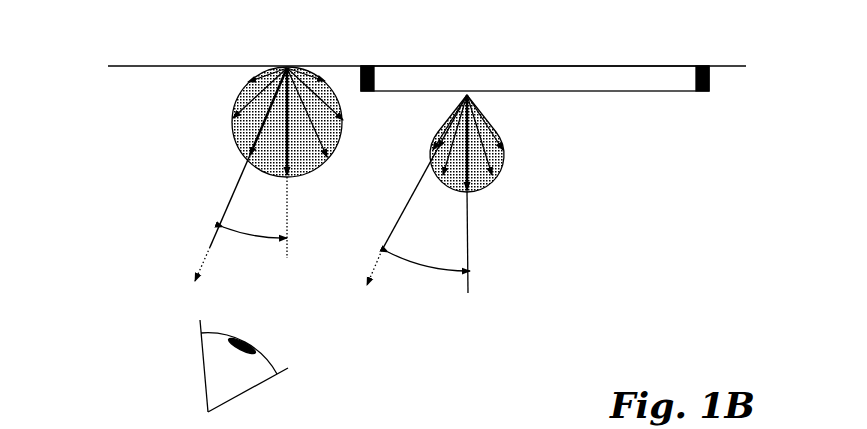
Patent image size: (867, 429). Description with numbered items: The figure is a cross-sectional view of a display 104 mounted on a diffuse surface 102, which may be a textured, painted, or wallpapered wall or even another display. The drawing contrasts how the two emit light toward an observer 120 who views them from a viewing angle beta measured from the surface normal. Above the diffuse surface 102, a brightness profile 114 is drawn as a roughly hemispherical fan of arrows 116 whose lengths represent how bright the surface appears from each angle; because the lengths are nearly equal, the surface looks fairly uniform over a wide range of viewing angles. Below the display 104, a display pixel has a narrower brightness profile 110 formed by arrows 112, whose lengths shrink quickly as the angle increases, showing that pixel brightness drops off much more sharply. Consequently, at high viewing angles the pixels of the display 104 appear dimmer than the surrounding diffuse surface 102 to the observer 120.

The diffuse surface 102 is at (210, 66).
The display 104 is at (660, 95).
The brightness profile 110 is at (505, 140).
The arrows 112 is at (432, 140).
The brightness profile 114 is at (232, 107).
The arrows 116 is at (255, 137).
The observer 120 is at (208, 378).